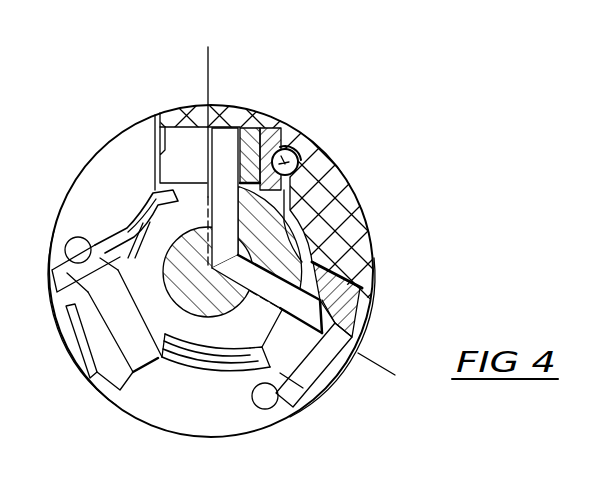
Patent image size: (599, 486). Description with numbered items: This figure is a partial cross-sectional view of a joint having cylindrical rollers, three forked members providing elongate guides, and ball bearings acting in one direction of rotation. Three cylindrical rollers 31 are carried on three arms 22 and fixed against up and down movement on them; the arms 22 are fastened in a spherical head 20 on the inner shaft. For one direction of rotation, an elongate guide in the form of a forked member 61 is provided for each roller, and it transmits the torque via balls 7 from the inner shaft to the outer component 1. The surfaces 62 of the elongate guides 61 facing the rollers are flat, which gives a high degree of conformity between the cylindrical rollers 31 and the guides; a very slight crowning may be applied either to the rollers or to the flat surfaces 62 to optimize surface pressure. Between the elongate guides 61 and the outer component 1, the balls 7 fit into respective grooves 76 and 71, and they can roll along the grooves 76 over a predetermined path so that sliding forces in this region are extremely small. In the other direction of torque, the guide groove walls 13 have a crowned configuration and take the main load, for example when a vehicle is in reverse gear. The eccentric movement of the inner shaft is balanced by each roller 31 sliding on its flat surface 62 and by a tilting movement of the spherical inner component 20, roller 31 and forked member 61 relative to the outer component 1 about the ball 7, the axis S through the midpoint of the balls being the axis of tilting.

The outer component 1 is at (322, 164).
The axis of tilting S is at (333, 183).
The balls 7 is at (284, 160).
The guide groove walls 13 is at (168, 150).
The spherical head 20 is at (173, 213).
The arms 22 is at (80, 337).
The cylindrical rollers 31 is at (88, 293).
The forked member 61 is at (258, 140).
The flat surfaces 62 is at (96, 300).
The groove 71 is at (294, 147).
The grooves 76 is at (270, 140).